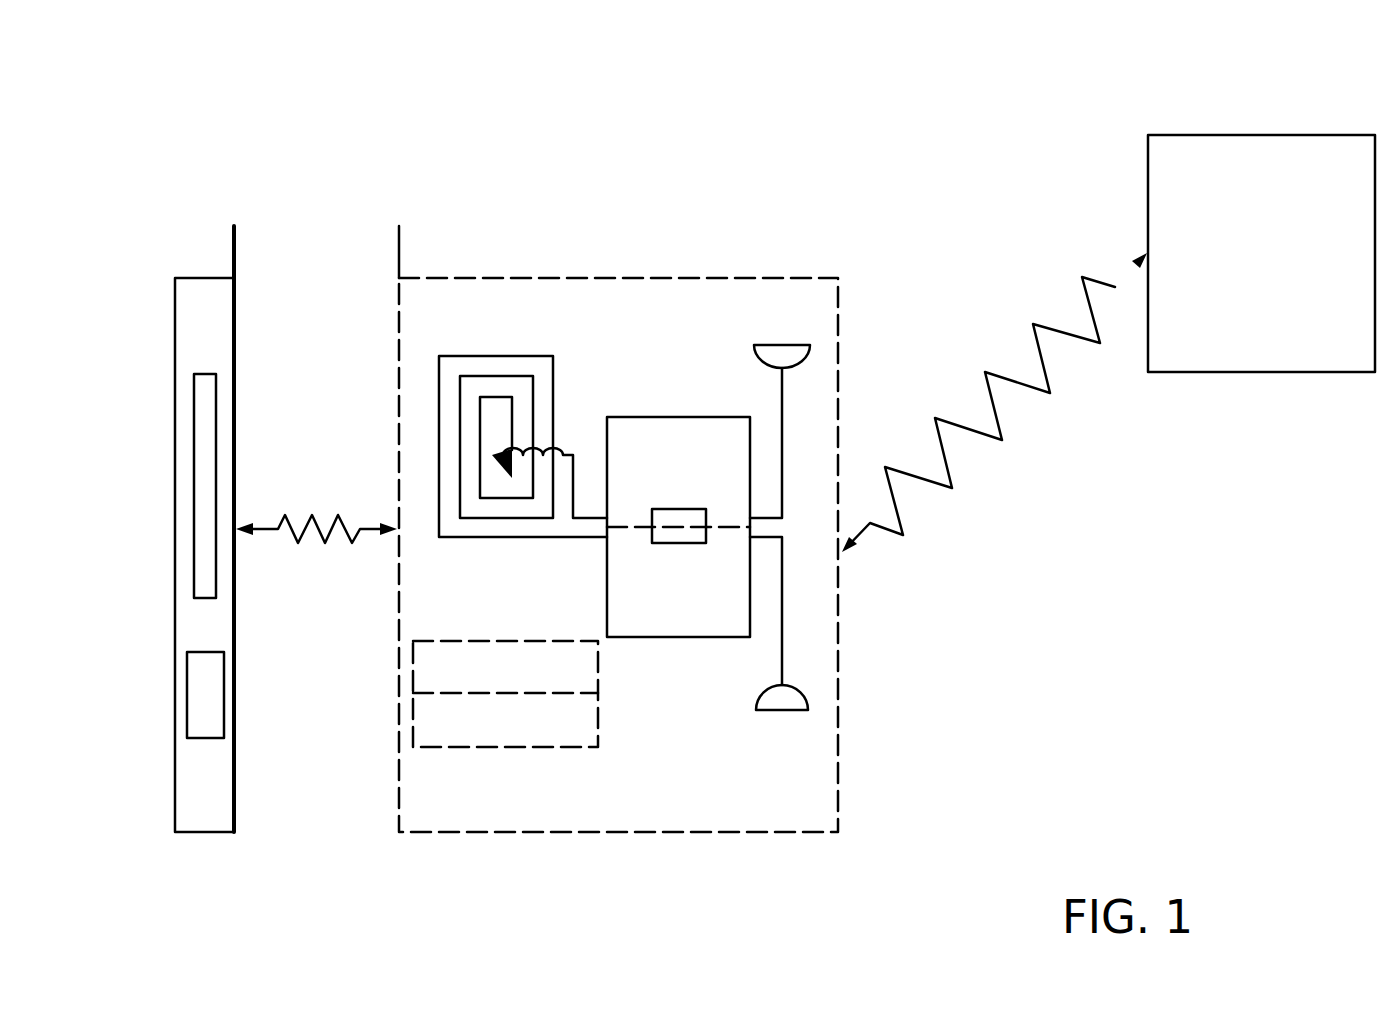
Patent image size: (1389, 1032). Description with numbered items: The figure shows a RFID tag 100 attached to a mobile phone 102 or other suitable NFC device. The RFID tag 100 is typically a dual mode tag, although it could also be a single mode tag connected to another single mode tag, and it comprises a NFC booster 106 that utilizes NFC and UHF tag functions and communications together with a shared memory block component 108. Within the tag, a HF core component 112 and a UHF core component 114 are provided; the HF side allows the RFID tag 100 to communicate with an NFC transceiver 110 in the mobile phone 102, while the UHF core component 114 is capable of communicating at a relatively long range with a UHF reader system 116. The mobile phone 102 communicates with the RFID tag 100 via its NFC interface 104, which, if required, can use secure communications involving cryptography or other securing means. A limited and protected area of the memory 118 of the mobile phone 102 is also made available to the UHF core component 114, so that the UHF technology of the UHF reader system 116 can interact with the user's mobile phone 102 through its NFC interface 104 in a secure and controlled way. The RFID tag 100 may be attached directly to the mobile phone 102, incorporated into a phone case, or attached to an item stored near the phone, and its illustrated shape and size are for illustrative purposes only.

The RFID tag 100 is at (868, 102).
The mobile phone 102 is at (163, 569).
The NFC interface 104 is at (484, 738).
The NFC booster 106 is at (679, 557).
The shared memory block component 108 is at (697, 543).
The NFC transceiver 110 is at (210, 396).
The HF core component 112 is at (697, 440).
The UHF core component 114 is at (710, 608).
The UHF reader system 116 is at (1188, 181).
The memory 118 is at (200, 720).